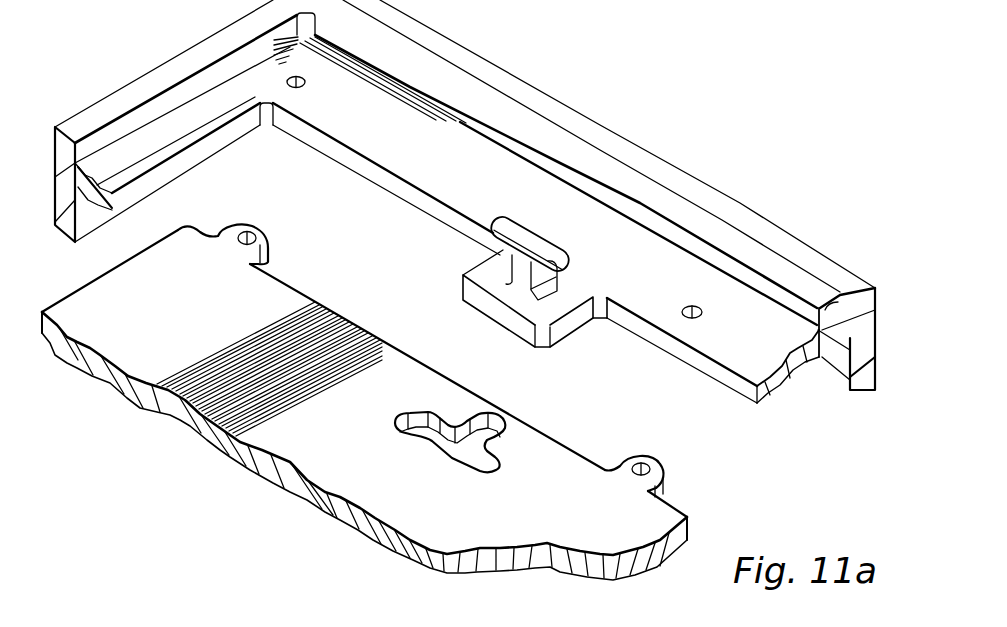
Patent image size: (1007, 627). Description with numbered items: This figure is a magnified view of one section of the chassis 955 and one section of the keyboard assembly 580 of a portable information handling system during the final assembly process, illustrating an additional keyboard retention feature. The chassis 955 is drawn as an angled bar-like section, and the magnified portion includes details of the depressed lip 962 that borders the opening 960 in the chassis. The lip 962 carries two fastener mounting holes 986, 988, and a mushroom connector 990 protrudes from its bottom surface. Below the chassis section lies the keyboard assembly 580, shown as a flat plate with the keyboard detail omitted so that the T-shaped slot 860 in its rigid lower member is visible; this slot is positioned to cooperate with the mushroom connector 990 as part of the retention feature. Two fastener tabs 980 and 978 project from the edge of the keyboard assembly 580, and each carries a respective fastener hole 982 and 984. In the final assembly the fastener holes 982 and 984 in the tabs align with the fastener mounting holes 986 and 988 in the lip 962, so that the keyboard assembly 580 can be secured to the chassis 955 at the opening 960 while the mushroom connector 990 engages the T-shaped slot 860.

The chassis 955 is at (465, 201).
The opening 960 is at (157, 110).
The depressed lip 962 is at (417, 167).
The fastener mounting hole 986 is at (305, 85).
The fastener mounting hole 988 is at (682, 308).
The mushroom connector 990 is at (505, 216).
The keyboard assembly 580 is at (364, 379).
The fastener tab 980 is at (223, 234).
The fastener hole 982 is at (240, 240).
The fastener tab 978 is at (626, 464).
The fastener hole 984 is at (640, 472).
The T-shaped slot 860 is at (433, 456).